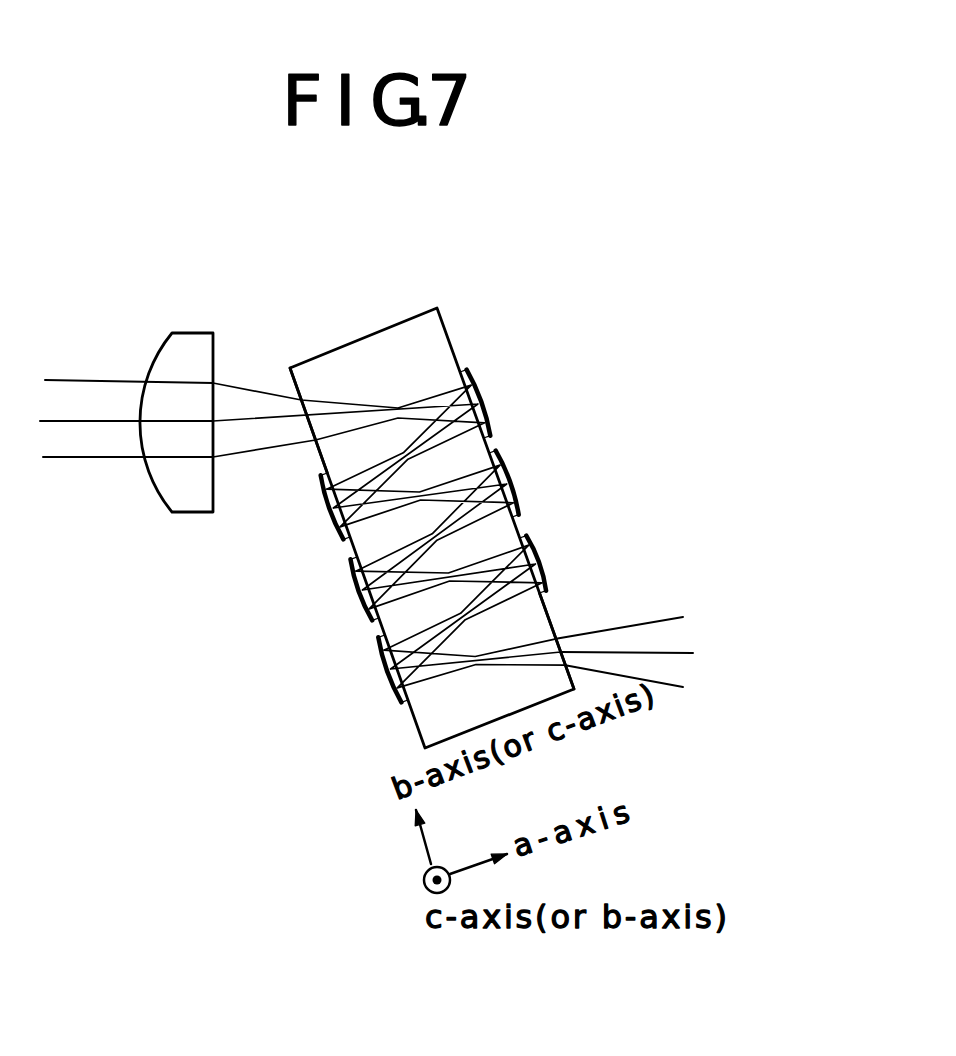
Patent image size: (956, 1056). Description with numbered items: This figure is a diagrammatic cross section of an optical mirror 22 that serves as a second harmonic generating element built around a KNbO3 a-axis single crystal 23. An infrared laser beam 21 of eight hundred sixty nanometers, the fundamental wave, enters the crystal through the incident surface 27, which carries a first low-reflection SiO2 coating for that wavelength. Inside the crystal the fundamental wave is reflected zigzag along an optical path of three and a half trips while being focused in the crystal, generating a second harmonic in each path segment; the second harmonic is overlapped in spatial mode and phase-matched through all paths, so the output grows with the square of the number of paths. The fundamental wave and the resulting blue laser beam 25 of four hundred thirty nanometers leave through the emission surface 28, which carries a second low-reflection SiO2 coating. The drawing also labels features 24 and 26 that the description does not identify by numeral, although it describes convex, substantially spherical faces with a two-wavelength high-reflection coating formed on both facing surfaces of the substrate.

The infrared laser beam 21 is at (75, 378).
The optical mirror 22 is at (188, 333).
The KNbO3 a-axis single crystal 23 is at (427, 308).
The concave reflecting mirror 24 is at (497, 397).
The blue laser beam 25 is at (655, 607).
The reflecting surface 26 is at (472, 377).
The incident surface 27 is at (290, 445).
The emission surface 28 is at (562, 630).